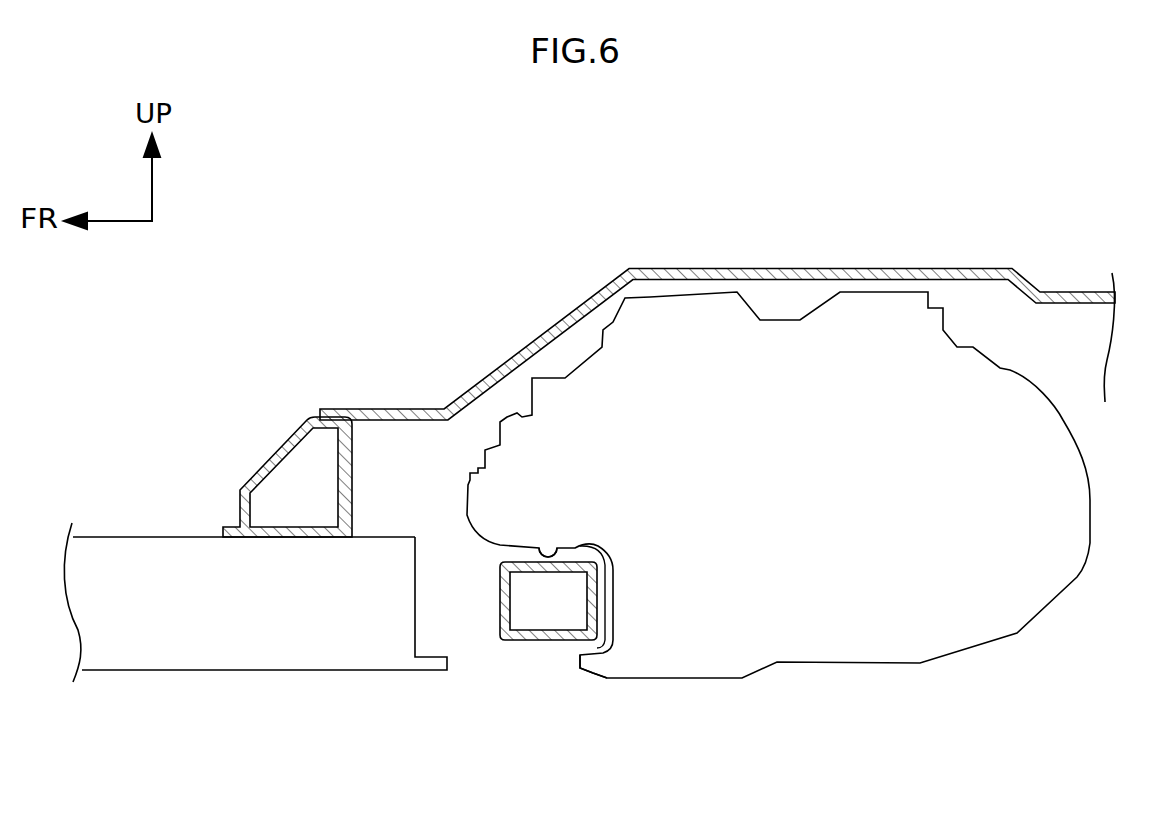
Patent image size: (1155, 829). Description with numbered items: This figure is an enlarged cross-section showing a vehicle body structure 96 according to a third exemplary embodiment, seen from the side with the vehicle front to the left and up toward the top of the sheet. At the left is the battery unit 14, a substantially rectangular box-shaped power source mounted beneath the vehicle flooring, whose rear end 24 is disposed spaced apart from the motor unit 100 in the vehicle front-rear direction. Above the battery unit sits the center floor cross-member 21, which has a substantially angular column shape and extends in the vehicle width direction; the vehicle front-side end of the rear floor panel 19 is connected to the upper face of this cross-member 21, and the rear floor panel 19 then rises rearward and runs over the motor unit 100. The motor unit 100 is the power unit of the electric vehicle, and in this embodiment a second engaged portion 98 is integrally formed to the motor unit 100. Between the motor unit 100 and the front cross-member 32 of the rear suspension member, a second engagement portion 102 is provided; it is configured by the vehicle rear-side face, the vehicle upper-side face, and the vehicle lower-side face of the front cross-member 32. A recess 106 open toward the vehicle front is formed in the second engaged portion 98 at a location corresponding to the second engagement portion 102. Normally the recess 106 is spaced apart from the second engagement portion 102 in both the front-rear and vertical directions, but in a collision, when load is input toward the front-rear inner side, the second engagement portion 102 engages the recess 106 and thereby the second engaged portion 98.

The battery unit 14 is at (205, 655).
The rear end of the battery unit 24 is at (390, 652).
The center floor cross-member 21 is at (277, 449).
The rear floor panel 19 is at (688, 272).
The vehicle body structure 96 is at (846, 197).
The motor unit 100 is at (827, 648).
The second engaged portion 98 is at (593, 665).
The recess 106 is at (540, 552).
The second engagement portion 102 is at (612, 643).
The front cross-member 32 is at (526, 640).